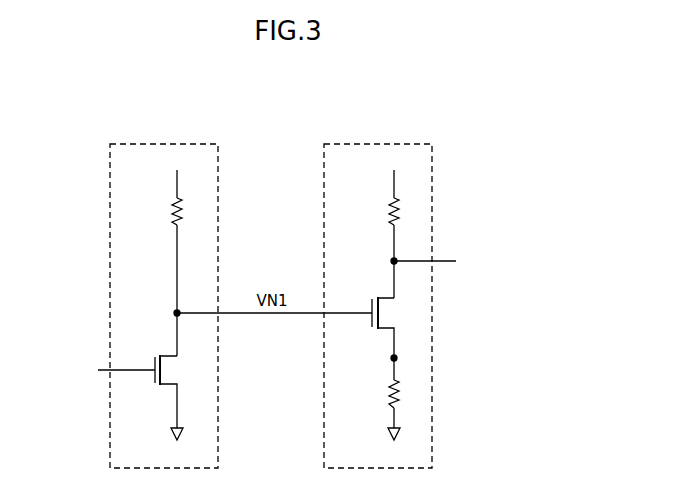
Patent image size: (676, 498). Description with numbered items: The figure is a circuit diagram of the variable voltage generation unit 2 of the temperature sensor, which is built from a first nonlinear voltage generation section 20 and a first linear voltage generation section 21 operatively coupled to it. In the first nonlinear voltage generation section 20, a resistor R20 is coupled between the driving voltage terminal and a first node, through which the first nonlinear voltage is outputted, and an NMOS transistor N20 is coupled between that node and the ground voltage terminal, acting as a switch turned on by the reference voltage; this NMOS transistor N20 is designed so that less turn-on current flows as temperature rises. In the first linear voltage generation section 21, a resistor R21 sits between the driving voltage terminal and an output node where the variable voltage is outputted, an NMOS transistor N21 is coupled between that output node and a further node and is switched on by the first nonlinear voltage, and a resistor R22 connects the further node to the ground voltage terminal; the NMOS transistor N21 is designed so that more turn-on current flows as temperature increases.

The variable voltage generation unit 2 is at (430, 66).
The first nonlinear voltage generation section 20 is at (168, 143).
The first linear voltage generation section 21 is at (372, 143).
The resistor R20 is at (159, 211).
The resistor R21 is at (377, 211).
The resistor R22 is at (377, 394).
The NMOS transistor N20 is at (175, 391).
The NMOS transistor N21 is at (392, 338).